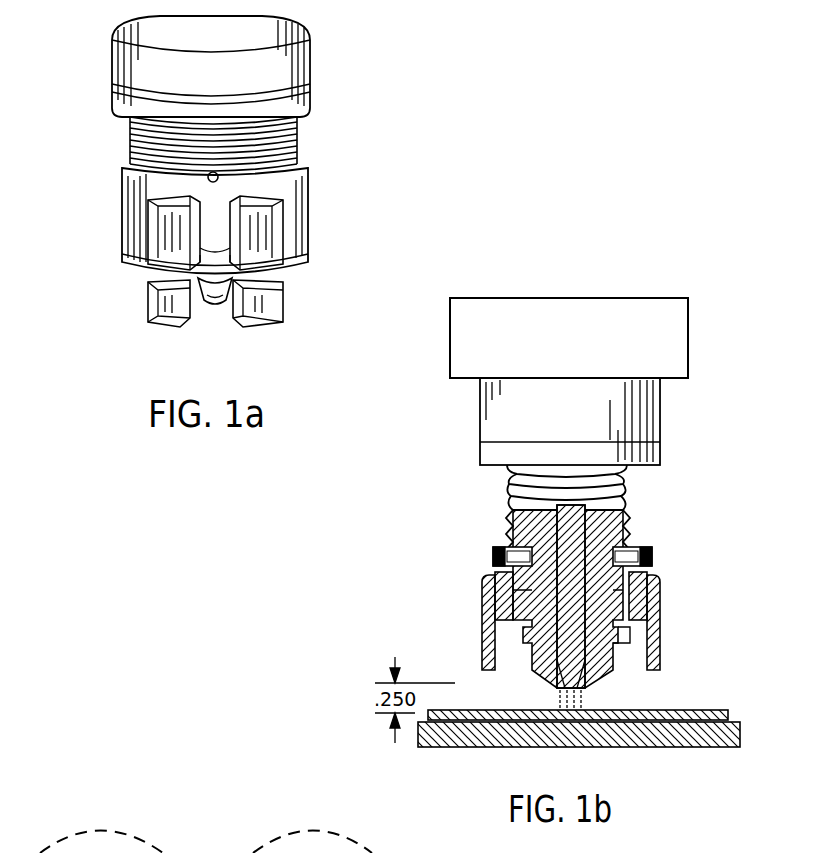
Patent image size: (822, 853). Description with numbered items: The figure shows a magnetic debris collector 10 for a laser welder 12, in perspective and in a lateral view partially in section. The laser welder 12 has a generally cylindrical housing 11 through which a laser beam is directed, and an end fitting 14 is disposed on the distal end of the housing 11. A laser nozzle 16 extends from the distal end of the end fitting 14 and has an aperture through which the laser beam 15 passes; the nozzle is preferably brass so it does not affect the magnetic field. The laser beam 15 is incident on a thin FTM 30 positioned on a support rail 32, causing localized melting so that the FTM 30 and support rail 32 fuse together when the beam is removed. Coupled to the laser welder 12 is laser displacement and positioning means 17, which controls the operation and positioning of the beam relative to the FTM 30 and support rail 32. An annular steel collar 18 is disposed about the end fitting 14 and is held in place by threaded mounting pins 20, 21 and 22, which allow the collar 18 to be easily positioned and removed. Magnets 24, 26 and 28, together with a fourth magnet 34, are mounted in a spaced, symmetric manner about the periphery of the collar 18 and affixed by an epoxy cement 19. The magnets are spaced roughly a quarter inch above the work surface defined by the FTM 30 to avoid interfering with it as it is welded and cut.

In FIG. 1A, the magnetic debris collector 10 is at (345, 268).
In FIG. 1B, the magnetic debris collector 10 is at (410, 643).
In FIG. 1A, the cylindrical housing 11 is at (316, 67).
In FIG. 1B, the cylindrical housing 11 is at (568, 425).
In FIG. 1A, the laser welder 12 is at (100, 125).
In FIG. 1B, the laser welder 12 is at (480, 505).
In FIG. 1A, the end fitting 14 is at (148, 300).
In FIG. 1B, the end fitting 14 is at (530, 632).
In FIG. 1B, the laser beam 15 is at (586, 697).
In FIG. 1A, the laser nozzle 16 is at (212, 308).
In FIG. 1B, the laser nozzle 16 is at (531, 693).
In FIG. 1B, the laser displacement and positioning means 17 is at (669, 371).
In FIG. 1A, the annular steel collar 18 is at (290, 275).
In FIG. 1B, the annular steel collar 18 is at (636, 547).
In FIG. 1B, the epoxy cement 19 is at (492, 572).
In FIG. 1A, the threaded mounting pin 20 is at (122, 196).
In FIG. 1B, the threaded mounting pin 20 is at (492, 553).
In FIG. 1A, the threaded mounting pin 21 is at (219, 176).
In FIG. 1A, the threaded mounting pin 22 is at (303, 193).
In FIG. 1B, the threaded mounting pin 22 is at (653, 553).
In FIG. 1A, the magnet 24 is at (157, 233).
In FIG. 1B, the magnet 24 is at (480, 628).
In FIG. 1A, the magnet 26 is at (272, 230).
In FIG. 1A, the magnet 28 is at (276, 320).
In FIG. 1B, the magnet 28 is at (662, 637).
In FIG. 1B, the FTM 30 is at (715, 710).
In FIG. 1B, the support rail 32 is at (715, 748).
In FIG. 1A, the fourth magnet 34 is at (153, 320).
In FIG. 1B, the fourth magnet 34 is at (612, 665).